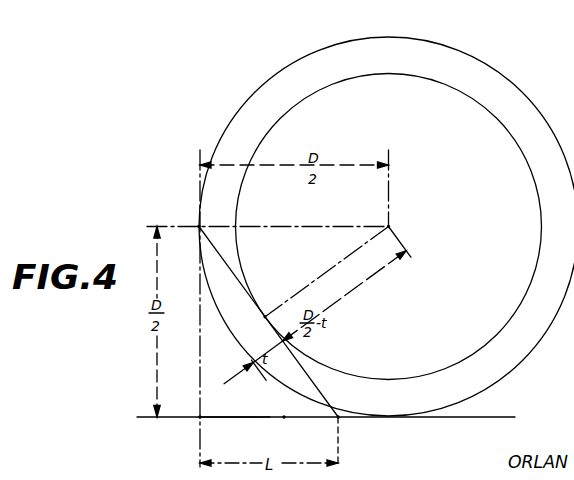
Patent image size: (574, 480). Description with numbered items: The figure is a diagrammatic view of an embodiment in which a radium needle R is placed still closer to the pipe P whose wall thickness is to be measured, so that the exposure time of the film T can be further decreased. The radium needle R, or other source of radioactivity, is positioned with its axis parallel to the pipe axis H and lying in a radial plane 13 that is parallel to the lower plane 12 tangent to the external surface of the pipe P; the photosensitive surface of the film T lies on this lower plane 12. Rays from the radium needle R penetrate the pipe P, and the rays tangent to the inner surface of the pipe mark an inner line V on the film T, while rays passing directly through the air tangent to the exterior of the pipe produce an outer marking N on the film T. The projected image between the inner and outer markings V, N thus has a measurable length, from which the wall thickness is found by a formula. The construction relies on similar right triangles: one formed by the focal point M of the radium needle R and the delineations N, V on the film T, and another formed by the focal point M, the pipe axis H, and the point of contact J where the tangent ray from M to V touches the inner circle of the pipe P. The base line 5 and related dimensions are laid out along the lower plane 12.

The base line segment 5 is at (228, 418).
The lower plane 12 is at (465, 419).
The radial plane 13 is at (314, 205).
The pipe P is at (530, 106).
The focal point M is at (199, 226).
The radium needle R is at (200, 229).
The pipe axis H is at (389, 228).
The point of contact J is at (265, 317).
The outer marking N is at (199, 419).
The film T is at (284, 419).
The inner line V is at (340, 419).